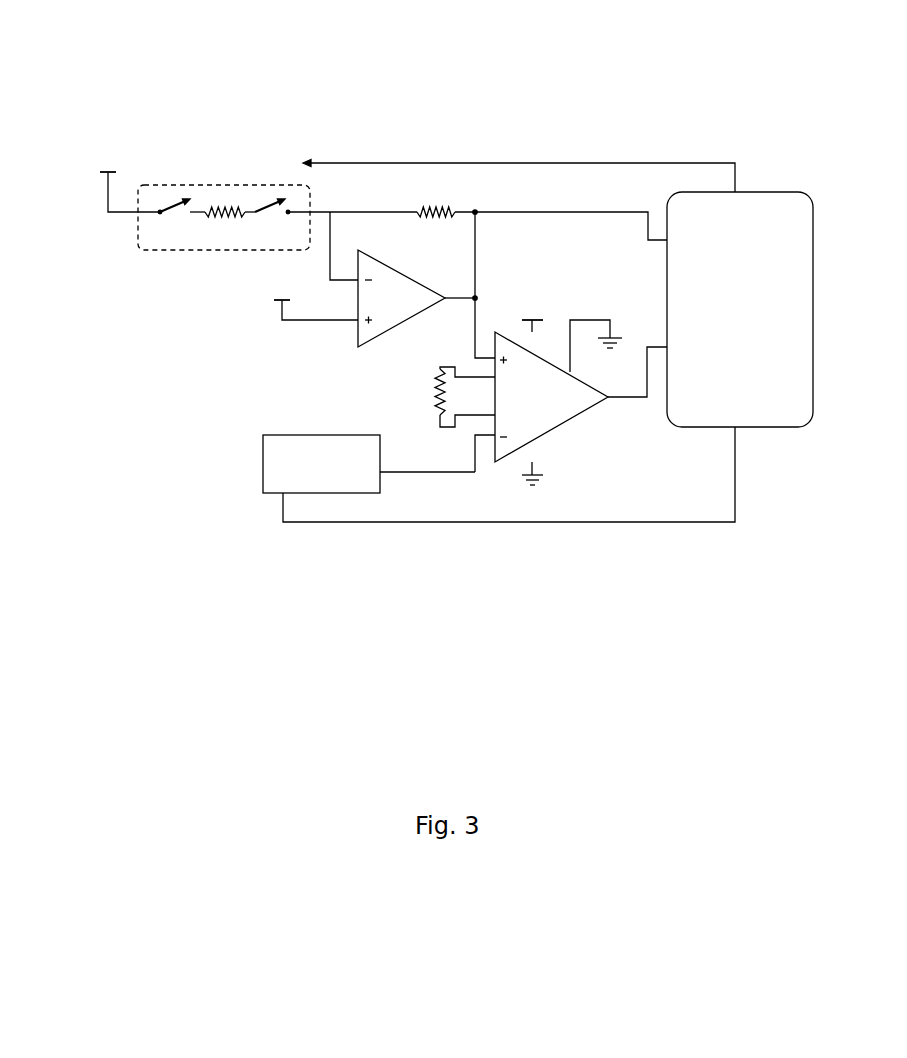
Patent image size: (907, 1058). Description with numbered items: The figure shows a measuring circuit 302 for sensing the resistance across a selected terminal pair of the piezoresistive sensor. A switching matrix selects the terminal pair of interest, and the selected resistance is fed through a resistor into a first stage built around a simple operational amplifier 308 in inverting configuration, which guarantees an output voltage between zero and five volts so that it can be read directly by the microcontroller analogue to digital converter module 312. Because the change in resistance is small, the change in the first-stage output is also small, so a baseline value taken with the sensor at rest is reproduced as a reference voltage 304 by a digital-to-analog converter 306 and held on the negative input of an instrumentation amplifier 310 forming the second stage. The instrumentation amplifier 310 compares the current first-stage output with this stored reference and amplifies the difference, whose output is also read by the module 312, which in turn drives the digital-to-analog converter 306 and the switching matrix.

The measuring circuit 302 is at (740, 94).
The reference voltage V_ref_i 304 is at (417, 485).
The digital-to-analog converter 306 is at (253, 472).
The operational amplifier 308 is at (379, 248).
The instrumentation amplifier 310 is at (555, 425).
The microcontroller analogue to digital converter module 312 is at (829, 394).